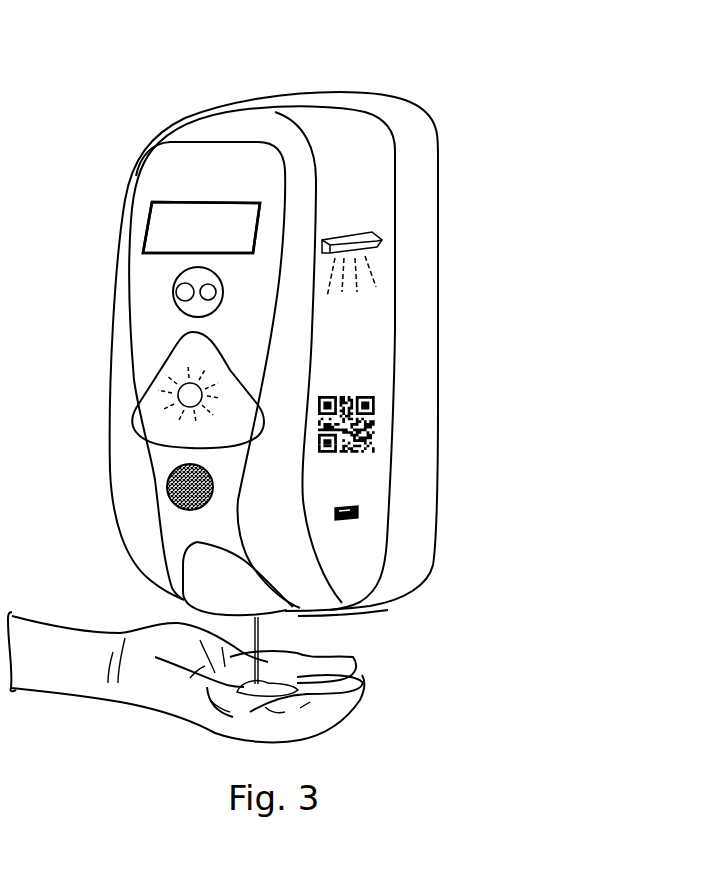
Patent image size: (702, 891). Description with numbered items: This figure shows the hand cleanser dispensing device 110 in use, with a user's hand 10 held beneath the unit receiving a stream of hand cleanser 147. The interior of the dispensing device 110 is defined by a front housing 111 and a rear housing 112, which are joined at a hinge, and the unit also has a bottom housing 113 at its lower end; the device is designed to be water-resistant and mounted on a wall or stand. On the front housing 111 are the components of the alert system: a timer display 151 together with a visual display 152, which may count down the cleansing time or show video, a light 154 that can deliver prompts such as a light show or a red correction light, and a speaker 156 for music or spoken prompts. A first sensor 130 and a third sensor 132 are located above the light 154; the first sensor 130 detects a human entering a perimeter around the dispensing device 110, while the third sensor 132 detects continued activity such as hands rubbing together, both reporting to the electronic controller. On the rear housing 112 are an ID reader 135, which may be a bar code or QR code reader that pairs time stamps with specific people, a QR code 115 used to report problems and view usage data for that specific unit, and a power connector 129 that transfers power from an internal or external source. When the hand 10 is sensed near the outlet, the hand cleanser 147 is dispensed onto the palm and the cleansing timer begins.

The hand 10 is at (357, 675).
The dispensing device 110 is at (386, 60).
The front housing 111 is at (378, 170).
The rear housing 112 is at (412, 192).
The bottom housing 113 is at (20, 0).
The QR code 115 is at (372, 423).
The power connector 129 is at (359, 511).
The first sensor 130 is at (176, 290).
The third sensor 132 is at (204, 297).
The ID reader 135 is at (380, 243).
The hand cleanser 147 is at (253, 620).
The timer display 151 is at (147, 227).
The visual display 152 is at (142, 236).
The light 154 is at (177, 396).
The speaker 156 is at (170, 494).